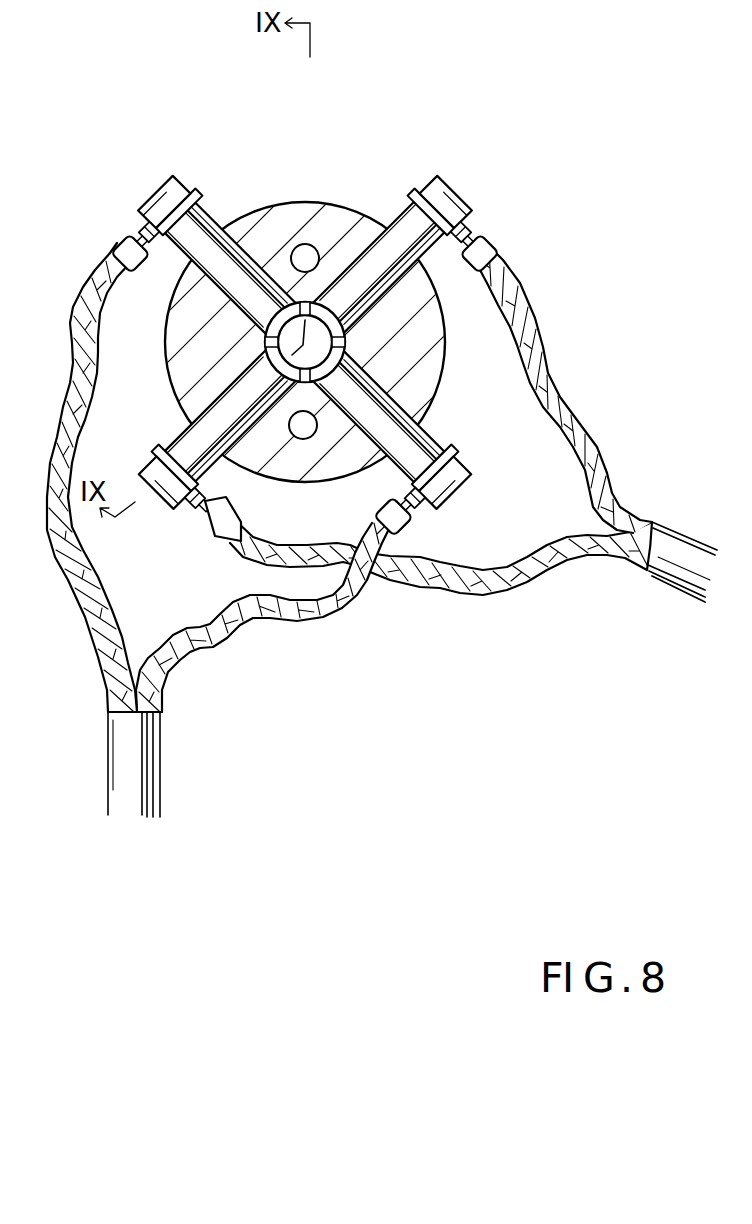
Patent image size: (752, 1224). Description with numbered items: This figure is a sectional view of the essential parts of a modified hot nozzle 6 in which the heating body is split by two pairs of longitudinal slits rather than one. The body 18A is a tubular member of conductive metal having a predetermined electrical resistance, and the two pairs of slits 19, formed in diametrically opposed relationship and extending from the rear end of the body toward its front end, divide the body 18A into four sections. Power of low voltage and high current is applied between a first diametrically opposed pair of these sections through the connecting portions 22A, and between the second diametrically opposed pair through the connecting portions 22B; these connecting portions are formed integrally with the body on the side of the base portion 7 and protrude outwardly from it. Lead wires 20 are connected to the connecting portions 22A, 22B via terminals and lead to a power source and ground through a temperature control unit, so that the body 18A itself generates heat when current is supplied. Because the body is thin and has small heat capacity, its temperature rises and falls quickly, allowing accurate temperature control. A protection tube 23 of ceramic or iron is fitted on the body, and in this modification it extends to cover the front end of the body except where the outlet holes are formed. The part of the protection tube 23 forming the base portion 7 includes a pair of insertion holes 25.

The hot nozzle 6 is at (325, 314).
The base portion 7 is at (261, 201).
The body 18A is at (340, 372).
The longitudinal slits 19 is at (313, 301).
The lead wires 20 is at (60, 567).
The connecting portions 22A is at (482, 278).
The connecting portions 22B is at (128, 257).
The protection tube 23 is at (240, 522).
The insertion holes 25 is at (305, 252).